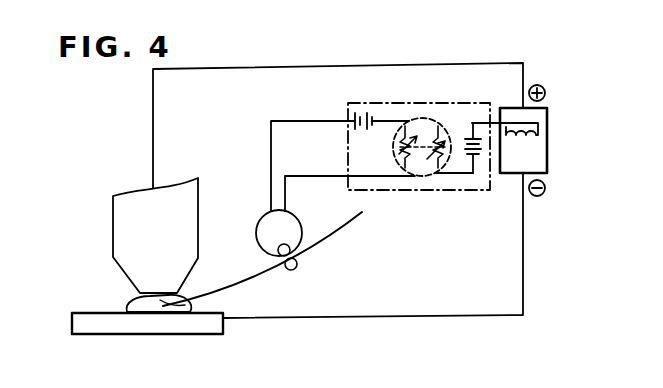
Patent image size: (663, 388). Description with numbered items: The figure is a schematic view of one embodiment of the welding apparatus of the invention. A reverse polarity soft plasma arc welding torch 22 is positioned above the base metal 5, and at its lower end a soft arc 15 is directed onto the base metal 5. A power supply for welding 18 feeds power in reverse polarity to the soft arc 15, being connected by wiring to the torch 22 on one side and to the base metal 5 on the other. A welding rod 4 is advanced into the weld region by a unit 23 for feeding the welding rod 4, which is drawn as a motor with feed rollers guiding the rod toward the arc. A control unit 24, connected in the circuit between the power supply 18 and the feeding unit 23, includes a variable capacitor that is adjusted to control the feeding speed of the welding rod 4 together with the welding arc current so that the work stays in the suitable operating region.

The welding rod 4 is at (246, 280).
The base metal 5 is at (72, 322).
The soft arc 15 is at (135, 300).
The power supply for welding 18 is at (540, 157).
The reverse polarity soft plasma arc welding torch 22 is at (113, 240).
The unit for feeding the welding rod 23 is at (257, 237).
The control unit 24 is at (423, 192).